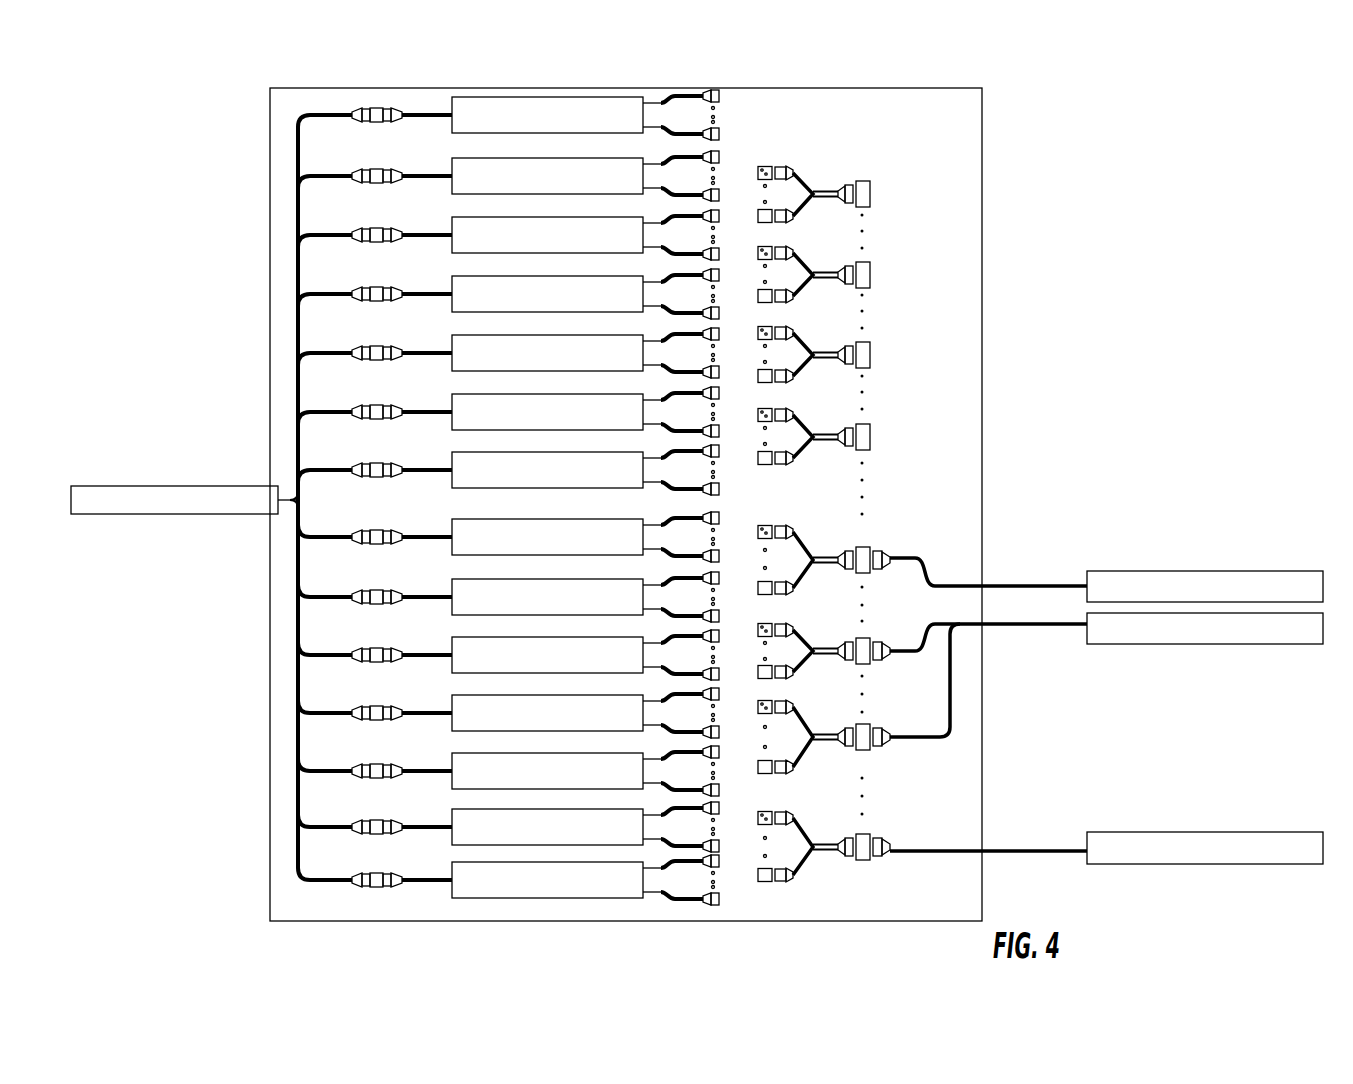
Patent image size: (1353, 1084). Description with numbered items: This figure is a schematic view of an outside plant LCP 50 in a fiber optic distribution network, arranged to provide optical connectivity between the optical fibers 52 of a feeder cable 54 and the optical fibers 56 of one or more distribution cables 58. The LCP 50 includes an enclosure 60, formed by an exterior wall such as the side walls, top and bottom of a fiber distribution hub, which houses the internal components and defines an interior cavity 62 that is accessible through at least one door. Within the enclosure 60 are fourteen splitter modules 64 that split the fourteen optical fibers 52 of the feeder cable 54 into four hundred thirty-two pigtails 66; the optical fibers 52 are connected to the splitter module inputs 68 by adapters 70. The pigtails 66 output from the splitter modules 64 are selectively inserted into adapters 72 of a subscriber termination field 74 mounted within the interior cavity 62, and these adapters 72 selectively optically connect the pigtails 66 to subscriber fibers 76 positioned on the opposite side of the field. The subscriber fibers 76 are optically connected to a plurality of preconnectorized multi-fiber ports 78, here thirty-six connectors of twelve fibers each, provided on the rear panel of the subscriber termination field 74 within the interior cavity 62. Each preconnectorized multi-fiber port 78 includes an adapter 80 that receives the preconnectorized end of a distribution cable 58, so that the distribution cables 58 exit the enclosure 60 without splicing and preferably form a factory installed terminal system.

The local convergence point (LCP) 50 is at (1085, 158).
The optical fibers of the feeder cable 52 is at (300, 112).
The feeder cable 54 is at (145, 487).
The optical fibers of the distribution cables 56 is at (1000, 583).
The distribution cables 58 is at (1125, 571).
The enclosure 60 is at (983, 137).
The interior cavity 62 is at (922, 148).
The splitter modules 64 is at (500, 97).
The pigtails 66 is at (683, 93).
The splitter module inputs 68 is at (428, 110).
The adapters 70 is at (377, 108).
The adapters of the subscriber termination field 72 is at (766, 165).
The subscriber termination field 74 is at (736, 172).
The subscriber fibers 76 is at (813, 170).
The preconnectorized multi-fiber ports 78 is at (868, 266).
The adapter 80 is at (870, 280).